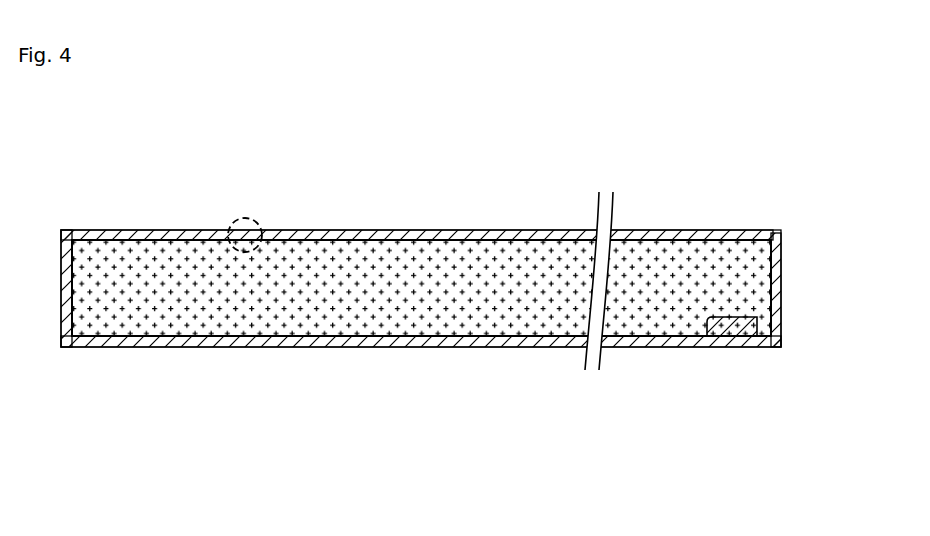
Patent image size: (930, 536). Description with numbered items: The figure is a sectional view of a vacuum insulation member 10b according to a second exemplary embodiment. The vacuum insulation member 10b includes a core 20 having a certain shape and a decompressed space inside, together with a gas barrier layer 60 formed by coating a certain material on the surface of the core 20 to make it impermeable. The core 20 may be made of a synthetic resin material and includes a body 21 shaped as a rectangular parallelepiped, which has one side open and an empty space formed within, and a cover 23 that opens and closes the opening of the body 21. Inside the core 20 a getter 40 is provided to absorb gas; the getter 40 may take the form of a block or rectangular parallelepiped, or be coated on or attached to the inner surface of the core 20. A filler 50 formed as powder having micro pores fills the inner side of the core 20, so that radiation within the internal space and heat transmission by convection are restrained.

The vacuum insulation member 10b is at (96, 200).
The core 20 is at (452, 323).
The body 21 is at (740, 347).
The cover 23 is at (781, 305).
The getter 40 is at (722, 328).
The filler 50 is at (405, 300).
The gas barrier layer 60 is at (367, 230).